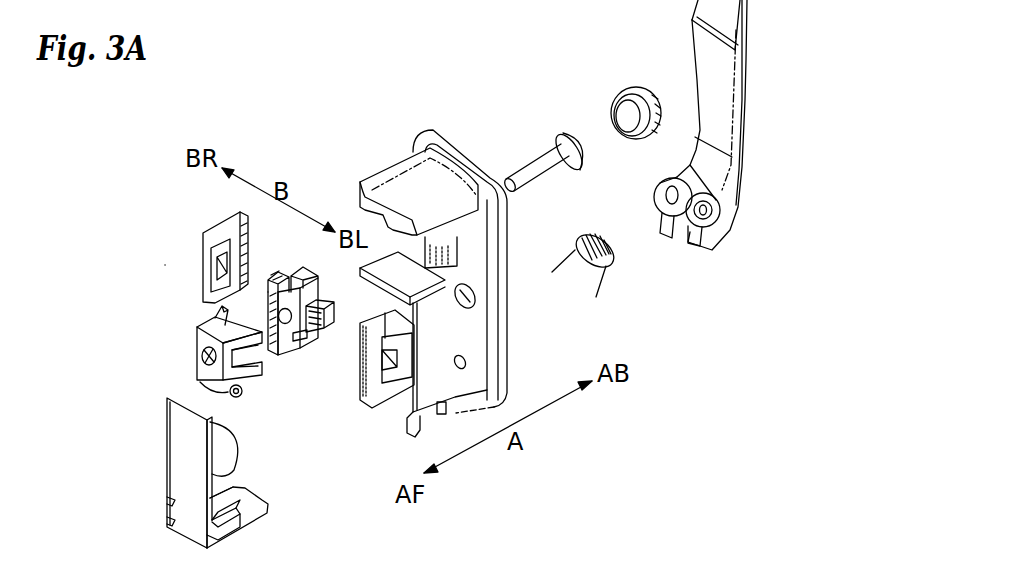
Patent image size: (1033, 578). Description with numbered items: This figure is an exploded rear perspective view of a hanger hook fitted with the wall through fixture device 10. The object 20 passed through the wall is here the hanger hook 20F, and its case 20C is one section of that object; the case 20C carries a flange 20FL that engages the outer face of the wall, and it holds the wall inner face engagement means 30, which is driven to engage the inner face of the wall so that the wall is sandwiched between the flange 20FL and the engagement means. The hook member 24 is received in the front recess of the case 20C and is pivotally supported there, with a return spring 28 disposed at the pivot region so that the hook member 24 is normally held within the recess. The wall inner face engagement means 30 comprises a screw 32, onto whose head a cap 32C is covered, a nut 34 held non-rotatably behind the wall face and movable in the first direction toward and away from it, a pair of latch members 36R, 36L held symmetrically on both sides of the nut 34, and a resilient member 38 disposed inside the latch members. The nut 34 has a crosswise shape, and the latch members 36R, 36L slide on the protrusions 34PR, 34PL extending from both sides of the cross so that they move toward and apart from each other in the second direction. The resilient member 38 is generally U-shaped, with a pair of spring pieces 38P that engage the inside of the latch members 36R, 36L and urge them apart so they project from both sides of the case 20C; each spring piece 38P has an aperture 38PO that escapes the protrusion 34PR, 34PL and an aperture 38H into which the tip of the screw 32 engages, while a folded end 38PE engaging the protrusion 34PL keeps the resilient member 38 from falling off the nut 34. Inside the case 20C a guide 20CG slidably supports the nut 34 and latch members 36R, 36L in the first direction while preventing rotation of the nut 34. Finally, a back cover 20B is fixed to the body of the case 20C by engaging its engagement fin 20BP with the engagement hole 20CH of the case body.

The wall through fixture device 10 is at (163, 263).
The object 20 is at (446, 112).
The hanger hook 20F is at (448, 284).
The flange 20FL is at (417, 140).
The guide 20CG is at (388, 232).
The case 20C is at (511, 317).
The engagement hole 20CH is at (448, 409).
The latch member 36L is at (403, 386).
The latch member 36R is at (228, 222).
The nut 34 is at (290, 353).
The protrusion 34PR is at (263, 290).
The protrusion 34PL is at (330, 358).
The resilient member 38 is at (198, 334).
The spring piece 38P is at (218, 304).
The aperture 38H is at (200, 358).
The aperture 38PO is at (222, 384).
The folded end 38PE is at (262, 382).
The wall inner face engagement means 30 is at (140, 420).
The back cover 20B is at (185, 468).
The engagement fin 20BP is at (228, 530).
The screw 32 is at (548, 170).
The cap 32C is at (637, 88).
The return spring 28 is at (599, 281).
The hook member 24 is at (742, 117).